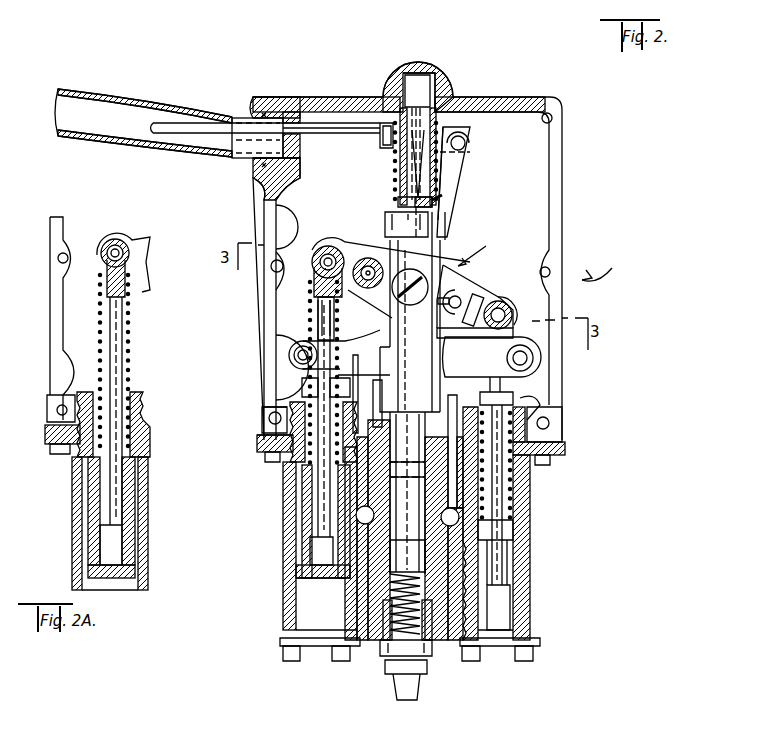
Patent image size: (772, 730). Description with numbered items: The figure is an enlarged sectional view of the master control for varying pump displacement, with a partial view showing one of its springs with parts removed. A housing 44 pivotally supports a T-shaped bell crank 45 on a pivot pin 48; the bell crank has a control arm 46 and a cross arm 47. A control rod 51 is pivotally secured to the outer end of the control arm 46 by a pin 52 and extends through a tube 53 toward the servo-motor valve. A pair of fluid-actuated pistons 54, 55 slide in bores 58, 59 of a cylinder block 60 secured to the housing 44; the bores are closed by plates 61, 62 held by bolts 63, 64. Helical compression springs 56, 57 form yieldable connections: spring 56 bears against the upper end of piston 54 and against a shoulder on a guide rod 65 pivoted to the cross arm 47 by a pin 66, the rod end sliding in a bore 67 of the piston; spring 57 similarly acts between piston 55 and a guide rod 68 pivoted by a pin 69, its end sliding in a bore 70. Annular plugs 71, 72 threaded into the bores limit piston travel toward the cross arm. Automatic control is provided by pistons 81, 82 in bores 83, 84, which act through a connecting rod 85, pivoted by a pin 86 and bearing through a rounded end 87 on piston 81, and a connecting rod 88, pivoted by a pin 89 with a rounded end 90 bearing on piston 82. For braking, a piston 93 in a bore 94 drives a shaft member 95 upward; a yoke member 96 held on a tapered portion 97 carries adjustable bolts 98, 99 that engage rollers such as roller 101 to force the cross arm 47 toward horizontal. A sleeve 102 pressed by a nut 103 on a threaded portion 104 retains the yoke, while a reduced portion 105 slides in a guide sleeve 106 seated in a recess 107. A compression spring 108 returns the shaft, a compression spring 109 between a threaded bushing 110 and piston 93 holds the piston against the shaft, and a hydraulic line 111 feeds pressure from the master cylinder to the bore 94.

In FIG. 2, the housing 44 is at (562, 226).
In FIG. 2A, the housing 44 is at (50, 378).
In FIG. 2, the bell crank 45 is at (478, 251).
In FIG. 2, the control arm 46 is at (462, 206).
In FIG. 2, the cross arm 47 is at (440, 280).
In FIG. 2A, the cross arm 47 is at (150, 240).
In FIG. 2, the pivot pin 48 is at (408, 270).
In FIG. 2, the control rod 51 is at (338, 140).
In FIG. 2, the pin 52 is at (465, 148).
In FIG. 2, the tube 53 is at (128, 96).
In FIG. 2, the piston 54 is at (312, 545).
In FIG. 2A, the piston 54 is at (100, 522).
In FIG. 2, the piston 55 is at (517, 580).
In FIG. 2, the helical compression spring 56 is at (310, 318).
In FIG. 2A, the helical compression spring 56 is at (132, 312).
In FIG. 2, the helical compression spring 57 is at (550, 430).
In FIG. 2, the bore 58 is at (292, 586).
In FIG. 2, the bore 59 is at (522, 615).
In FIG. 2, the cylinder block 60 is at (530, 545).
In FIG. 2, the plate 61 is at (315, 648).
In FIG. 2, the plate 62 is at (495, 648).
In FIG. 2, the bolts 63 is at (290, 661).
In FIG. 2, the bolts 64 is at (470, 661).
In FIG. 2, the guide rod 65 is at (318, 303).
In FIG. 2A, the guide rod 65 is at (116, 355).
In FIG. 2, the pin 66 is at (328, 248).
In FIG. 2A, the pin 66 is at (117, 245).
In FIG. 2, the bore 67 is at (312, 555).
In FIG. 2A, the bore 67 is at (105, 540).
In FIG. 2, the guide rod 68 is at (505, 512).
In FIG. 2, the pin 69 is at (520, 315).
In FIG. 2, the bore 70 is at (505, 595).
In FIG. 2, the annular plug 71 is at (262, 408).
In FIG. 2A, the annular plug 71 is at (140, 410).
In FIG. 2, the annular plug 72 is at (540, 418).
In FIG. 2, the piston 81 is at (512, 493).
In FIG. 2, the piston 82 is at (378, 468).
In FIG. 2, the bore 83 is at (482, 527).
In FIG. 2, the bore 84 is at (368, 500).
In FIG. 2, the connecting rod 85 is at (505, 398).
In FIG. 2, the pin 86 is at (478, 290).
In FIG. 2, the rounded end 87 is at (449, 529).
In FIG. 2, the connecting rod 88 is at (360, 322).
In FIG. 2, the pin 89 is at (365, 258).
In FIG. 2, the rounded end 90 is at (366, 452).
In FIG. 2, the piston 93 is at (395, 568).
In FIG. 2, the bore 94 is at (395, 592).
In FIG. 2, the shaft member 95 is at (365, 531).
In FIG. 2, the yoke member 96 is at (410, 326).
In FIG. 2, the tapered portion 97 is at (407, 493).
In FIG. 2, the bolt 98 is at (330, 382).
In FIG. 2, the bolt 99 is at (490, 388).
In FIG. 2, the roller 101 is at (512, 310).
In FIG. 2, the sleeve 102 is at (409, 330).
In FIG. 2, the nut 103 is at (436, 228).
In FIG. 2, the threaded portion 104 is at (434, 204).
In FIG. 2, the portion of reduced diameter 105 is at (410, 182).
In FIG. 2, the guide sleeve 106 is at (395, 160).
In FIG. 2, the recess 107 is at (426, 70).
In FIG. 2, the compression spring 108 is at (440, 104).
In FIG. 2, the compression spring 109 is at (437, 656).
In FIG. 2, the threaded bushing 110 is at (395, 622).
In FIG. 2, the hydraulic line 111 is at (400, 690).